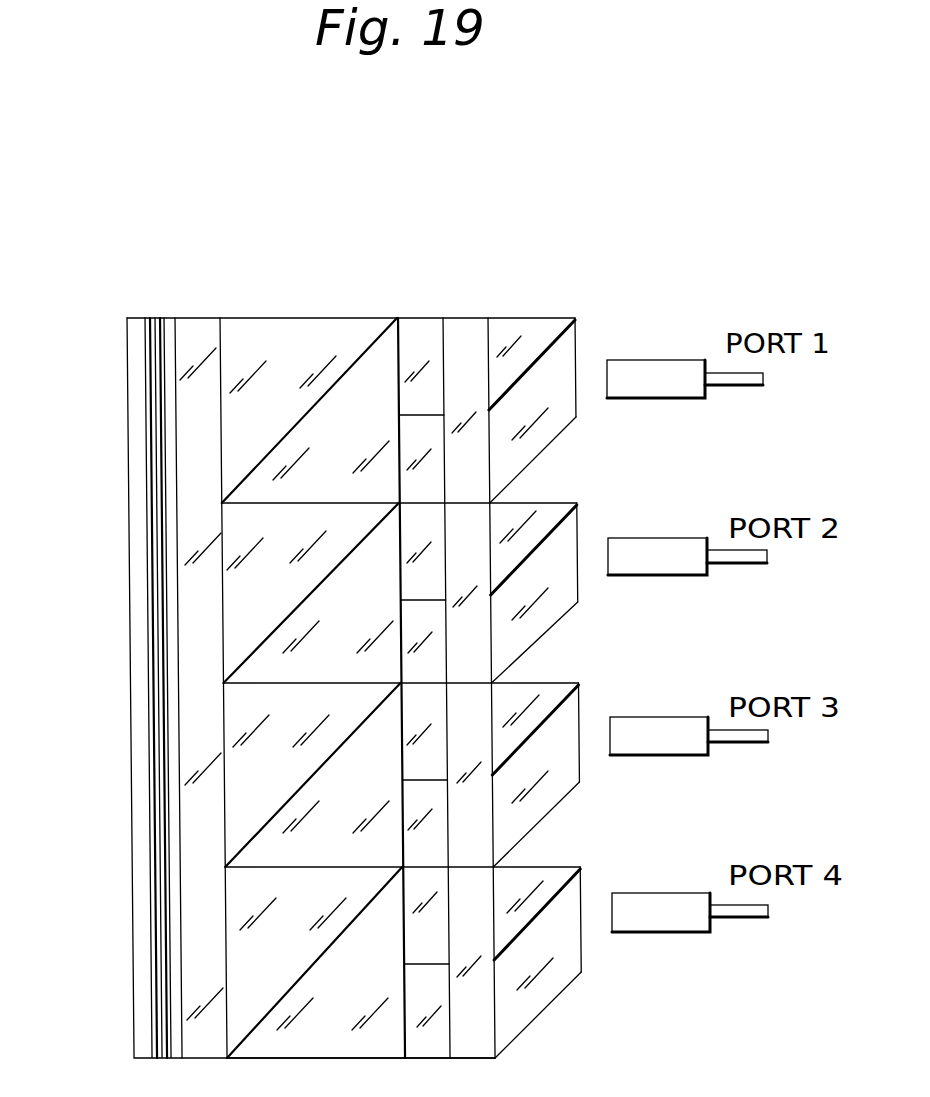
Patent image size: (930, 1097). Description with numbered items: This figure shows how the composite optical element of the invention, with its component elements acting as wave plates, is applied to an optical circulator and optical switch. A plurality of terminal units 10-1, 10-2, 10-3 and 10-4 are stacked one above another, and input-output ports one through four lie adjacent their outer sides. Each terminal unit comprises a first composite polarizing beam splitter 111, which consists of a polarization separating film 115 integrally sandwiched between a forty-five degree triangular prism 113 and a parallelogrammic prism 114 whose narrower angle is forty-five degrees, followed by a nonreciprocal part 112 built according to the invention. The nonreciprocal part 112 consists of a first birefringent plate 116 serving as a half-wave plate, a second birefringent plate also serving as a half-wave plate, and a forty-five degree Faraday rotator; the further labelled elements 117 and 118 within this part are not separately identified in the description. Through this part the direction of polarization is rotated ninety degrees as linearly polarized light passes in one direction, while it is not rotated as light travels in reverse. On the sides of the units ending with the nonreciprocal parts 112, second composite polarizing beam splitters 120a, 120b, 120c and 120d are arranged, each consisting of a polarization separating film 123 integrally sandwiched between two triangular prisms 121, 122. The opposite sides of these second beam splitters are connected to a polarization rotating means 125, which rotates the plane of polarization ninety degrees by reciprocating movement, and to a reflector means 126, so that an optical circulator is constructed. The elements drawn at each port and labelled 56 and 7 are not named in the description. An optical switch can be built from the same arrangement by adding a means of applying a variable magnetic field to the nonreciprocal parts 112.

The reflector means 126 is at (150, 347).
The polarization rotating means 125 is at (193, 333).
The triangular prism 121 is at (250, 340).
The triangular prism 122 is at (375, 378).
The polarization separating film 123 is at (335, 385).
The first composite polarizing beam splitter 111 is at (512, 312).
The nonreciprocal part 112 is at (510, 255).
The first birefringent plate 116 is at (422, 337).
The filter element 117 is at (430, 482).
The glass plate 118 is at (470, 337).
The 45° triangular prism 113 is at (538, 337).
The parallelogrammic prism 114 is at (565, 408).
The polarization separating film 115 is at (570, 342).
The second composite polarizing beam splitter 120a is at (246, 403).
The second composite polarizing beam splitter 120b is at (246, 583).
The second composite polarizing beam splitter 120c is at (250, 752).
The second composite polarizing beam splitter 120d is at (258, 941).
The terminal unit 10-1 is at (565, 438).
The terminal unit 10-2 is at (572, 622).
The terminal unit 10-3 is at (575, 800).
The terminal unit 10-4 is at (584, 987).
The photodetector 56 is at (655, 358).
The optical fiber 7 is at (742, 387).